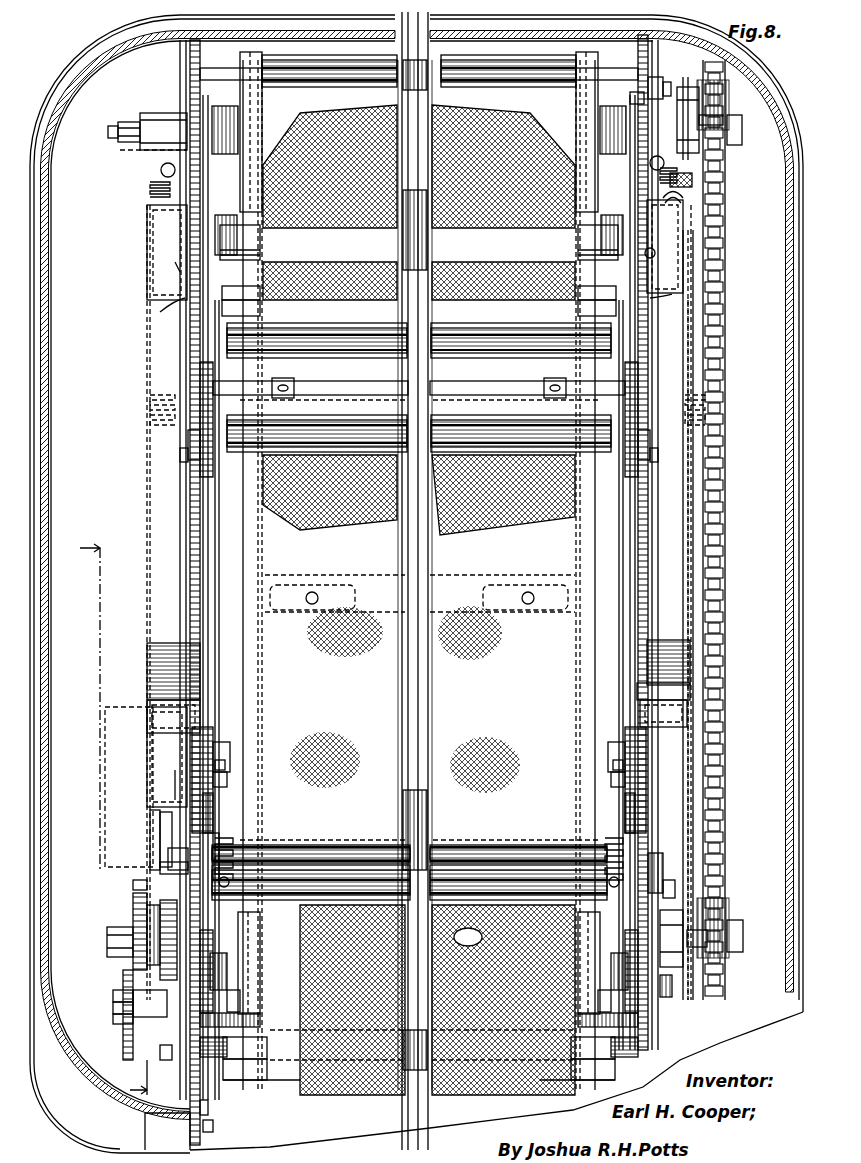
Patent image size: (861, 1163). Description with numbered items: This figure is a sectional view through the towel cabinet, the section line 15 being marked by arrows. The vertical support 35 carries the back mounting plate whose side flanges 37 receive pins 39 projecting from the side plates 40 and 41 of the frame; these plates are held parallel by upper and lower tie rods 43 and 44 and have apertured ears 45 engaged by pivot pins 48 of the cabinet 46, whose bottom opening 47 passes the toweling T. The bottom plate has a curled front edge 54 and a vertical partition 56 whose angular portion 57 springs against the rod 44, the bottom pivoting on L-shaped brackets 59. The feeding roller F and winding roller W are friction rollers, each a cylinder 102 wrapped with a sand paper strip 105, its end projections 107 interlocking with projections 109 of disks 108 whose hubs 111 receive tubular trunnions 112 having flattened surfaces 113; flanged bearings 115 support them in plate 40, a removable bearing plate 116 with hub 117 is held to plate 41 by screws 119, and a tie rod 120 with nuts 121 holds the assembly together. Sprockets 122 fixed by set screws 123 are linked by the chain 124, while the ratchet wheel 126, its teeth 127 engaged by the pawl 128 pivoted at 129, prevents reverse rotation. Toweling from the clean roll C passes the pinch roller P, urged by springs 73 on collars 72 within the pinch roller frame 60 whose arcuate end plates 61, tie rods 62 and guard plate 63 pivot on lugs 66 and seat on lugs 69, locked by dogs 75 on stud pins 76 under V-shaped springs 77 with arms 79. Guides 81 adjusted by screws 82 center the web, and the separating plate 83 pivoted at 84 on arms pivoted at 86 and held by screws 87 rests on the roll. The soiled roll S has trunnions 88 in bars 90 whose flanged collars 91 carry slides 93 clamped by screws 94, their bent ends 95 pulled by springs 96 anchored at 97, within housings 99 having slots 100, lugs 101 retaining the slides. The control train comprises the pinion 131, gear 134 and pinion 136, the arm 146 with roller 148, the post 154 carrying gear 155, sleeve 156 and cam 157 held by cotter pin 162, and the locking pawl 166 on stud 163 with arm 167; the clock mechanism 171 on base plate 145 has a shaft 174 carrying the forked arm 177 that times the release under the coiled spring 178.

The section line 15 is at (127, 821).
The vertical support 35 is at (265, 1131).
The side flanges 37 is at (183, 59).
The pins 39 is at (141, 158).
The side plate 40 is at (197, 77).
The side plate 41 is at (640, 540).
The upper tie rod 43 is at (419, 557).
The lower tie rod 44 is at (419, 292).
The apertured ears 45 is at (208, 1105).
The cabinet 46 is at (48, 507).
The bottom opening 47 is at (417, 583).
The pivot pins 48 is at (213, 1127).
The curled front edge 54 is at (419, 1069).
The vertical partition 56 is at (423, 575).
The angular portion 57 is at (419, 304).
The angular brackets 59 is at (419, 1023).
The pinch roller frame 60 is at (375, 845).
The arcuate end plates 61 is at (214, 805).
The tie rods 62 is at (409, 882).
The guard plate 63 is at (345, 845).
The pivot lugs 66 is at (419, 967).
The lugs 69 is at (240, 1000).
The spacing collars 72 is at (585, 975).
The coil springs 73 is at (240, 850).
The locking dogs 75 is at (207, 720).
The stud pins 76 is at (230, 752).
The V-shaped springs 77 is at (225, 766).
The spring arm 79 is at (227, 782).
The guides 81 is at (262, 230).
The screws 82 is at (315, 590).
The separating plate 83 is at (419, 387).
The pivot shaft 84 is at (330, 380).
The arm pivots 86 is at (215, 465).
The screws 87 is at (178, 468).
The trunnions 88 is at (423, 223).
The bearing bars 90 is at (245, 257).
The flanged collars 91 is at (160, 312).
The slides 93 is at (185, 292).
The clamping screws 94 is at (175, 268).
The bent ends 95 is at (150, 437).
The coiled spring 96 is at (150, 188).
The spring anchor 97 is at (160, 172).
The housing 99 is at (153, 240).
The slot 100 is at (200, 670).
The lugs 101 is at (185, 700).
The tubular cylinder 102 is at (255, 128).
The sand paper strip 105 is at (252, 116).
The projections 107 is at (250, 105).
The disks 108 is at (262, 195).
The projections 109 is at (240, 62).
The hubs 111 is at (570, 922).
The tubular trunnions 112 is at (130, 115).
The flattened surfaces 113 is at (112, 140).
The flanged bearings 115 is at (152, 113).
The bearing plate 116 is at (657, 77).
The sleeve 117 is at (632, 100).
The screws 119 is at (655, 84).
The tie rod 120 is at (108, 133).
The nuts 121 is at (116, 125).
The sprockets 122 is at (726, 116).
The set screw 123 is at (722, 88).
The chain 124 is at (727, 223).
The ratchet wheel 126 is at (677, 130).
The ratchet teeth 127 is at (686, 78).
The pawl 128 is at (698, 180).
The pawl pivot 129 is at (692, 194).
The spur gear 131 is at (120, 958).
The gear 134 is at (133, 884).
The pinion 136 is at (133, 900).
The base plate 145 is at (170, 745).
The arm 146 is at (160, 836).
The roller 148 is at (168, 858).
The post 154 is at (113, 1000).
The gear 155 is at (113, 1035).
The sleeve 156 is at (151, 1003).
The cam 157 is at (147, 1068).
The spring cotter pin 162 is at (113, 1015).
The bearing stud 163 is at (146, 1015).
The locking pawl 166 is at (152, 1049).
The pawl arm 167 is at (160, 867).
The timing mechanism 171 is at (105, 740).
The shaft 174 is at (178, 772).
The forked arm 177 is at (150, 820).
The coiled spring 178 is at (216, 845).
The clean towel roll C is at (405, 699).
The feeding roller F is at (422, 1000).
The pinch roller P is at (407, 589).
The soiled towel roller S is at (414, 235).
The toweling T is at (364, 1113).
The winding roller W is at (419, 315).